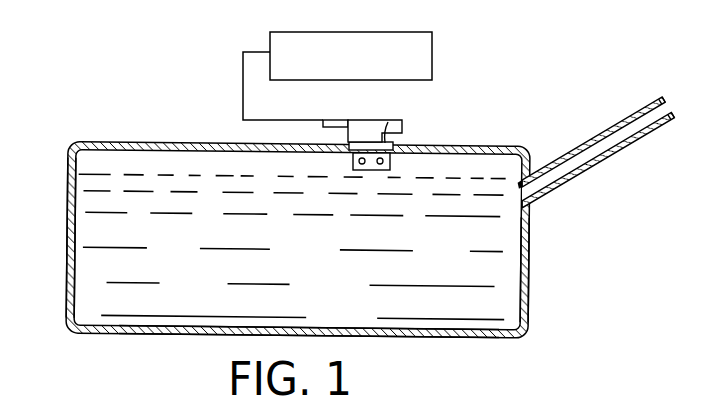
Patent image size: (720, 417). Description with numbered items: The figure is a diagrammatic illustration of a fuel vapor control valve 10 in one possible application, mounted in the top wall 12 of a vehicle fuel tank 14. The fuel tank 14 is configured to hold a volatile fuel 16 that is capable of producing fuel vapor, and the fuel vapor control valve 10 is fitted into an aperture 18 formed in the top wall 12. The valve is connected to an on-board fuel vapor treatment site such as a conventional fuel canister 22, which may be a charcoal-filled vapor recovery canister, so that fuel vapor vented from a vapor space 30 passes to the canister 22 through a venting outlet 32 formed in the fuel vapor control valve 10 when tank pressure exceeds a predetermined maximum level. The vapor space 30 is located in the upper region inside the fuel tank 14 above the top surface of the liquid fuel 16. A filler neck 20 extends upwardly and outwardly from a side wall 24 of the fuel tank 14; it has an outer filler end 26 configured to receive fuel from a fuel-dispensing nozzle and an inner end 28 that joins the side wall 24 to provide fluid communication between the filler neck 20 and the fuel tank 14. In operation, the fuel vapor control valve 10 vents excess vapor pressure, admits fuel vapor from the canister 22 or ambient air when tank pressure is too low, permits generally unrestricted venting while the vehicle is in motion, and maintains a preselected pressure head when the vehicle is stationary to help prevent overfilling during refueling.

The fuel vapor control valve 10 is at (408, 125).
The top wall 12 is at (187, 143).
The fuel tank 14 is at (65, 204).
The volatile fuel 16 is at (143, 303).
The aperture 18 is at (388, 122).
The filler neck 20 is at (587, 138).
The fuel canister 22 is at (440, 28).
The side wall 24 is at (529, 299).
The outer filler end 26 is at (657, 97).
The inner end 28 is at (519, 187).
The vapor space 30 is at (100, 162).
The venting outlet 32 is at (311, 112).